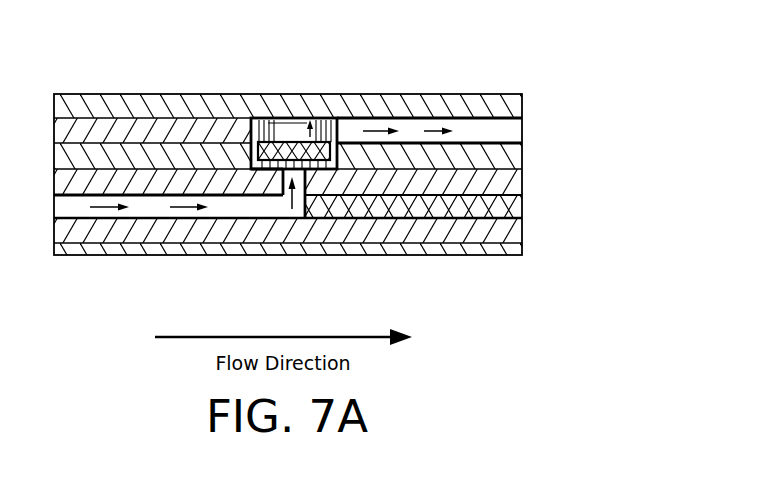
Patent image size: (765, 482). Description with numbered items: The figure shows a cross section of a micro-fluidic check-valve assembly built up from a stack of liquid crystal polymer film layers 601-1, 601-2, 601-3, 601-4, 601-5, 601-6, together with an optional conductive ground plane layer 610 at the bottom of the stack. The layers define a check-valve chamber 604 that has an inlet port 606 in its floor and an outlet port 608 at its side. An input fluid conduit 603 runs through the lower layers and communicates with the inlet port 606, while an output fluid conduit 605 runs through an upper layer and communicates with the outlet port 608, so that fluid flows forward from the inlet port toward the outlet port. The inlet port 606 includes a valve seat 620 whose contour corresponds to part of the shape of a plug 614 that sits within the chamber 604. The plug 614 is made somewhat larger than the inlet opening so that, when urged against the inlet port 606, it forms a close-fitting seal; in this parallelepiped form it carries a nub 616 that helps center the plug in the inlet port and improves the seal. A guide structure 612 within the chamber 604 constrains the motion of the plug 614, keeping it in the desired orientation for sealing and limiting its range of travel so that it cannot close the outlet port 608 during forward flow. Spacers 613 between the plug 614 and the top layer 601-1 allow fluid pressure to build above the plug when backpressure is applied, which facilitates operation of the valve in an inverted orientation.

The LCP film layer 601-1 is at (523, 105).
The LCP film layer 601-2 is at (523, 129).
The LCP film layer 601-3 is at (523, 155).
The LCP film layer 601-4 is at (523, 180).
The LCP film layer 601-5 is at (523, 205).
The LCP film layer 601-6 is at (523, 233).
The input fluid conduit 603 is at (222, 210).
The check-valve chamber 604 is at (340, 143).
The output fluid conduit 605 is at (488, 137).
The inlet port 606 is at (308, 178).
The outlet port 608 is at (400, 120).
The conductive ground plane layer 610 is at (482, 257).
The guide structure 612 is at (270, 120).
The spacers 613 is at (265, 119).
The plug 614 is at (295, 122).
The nub 616 is at (289, 178).
The valve seat 620 is at (272, 166).